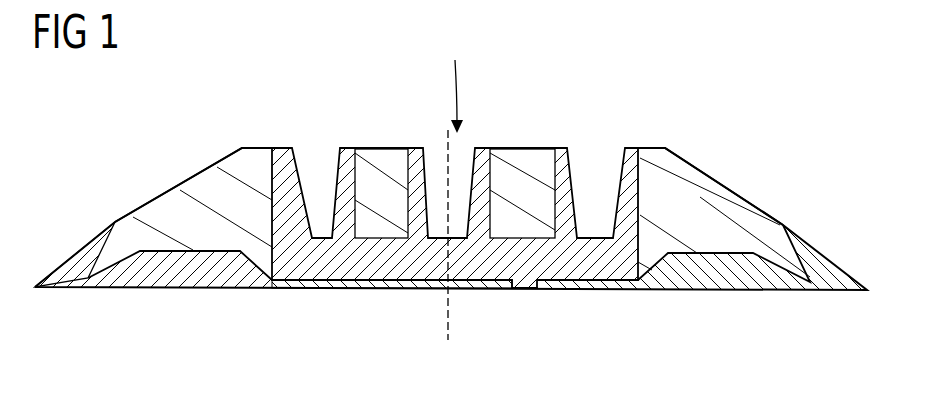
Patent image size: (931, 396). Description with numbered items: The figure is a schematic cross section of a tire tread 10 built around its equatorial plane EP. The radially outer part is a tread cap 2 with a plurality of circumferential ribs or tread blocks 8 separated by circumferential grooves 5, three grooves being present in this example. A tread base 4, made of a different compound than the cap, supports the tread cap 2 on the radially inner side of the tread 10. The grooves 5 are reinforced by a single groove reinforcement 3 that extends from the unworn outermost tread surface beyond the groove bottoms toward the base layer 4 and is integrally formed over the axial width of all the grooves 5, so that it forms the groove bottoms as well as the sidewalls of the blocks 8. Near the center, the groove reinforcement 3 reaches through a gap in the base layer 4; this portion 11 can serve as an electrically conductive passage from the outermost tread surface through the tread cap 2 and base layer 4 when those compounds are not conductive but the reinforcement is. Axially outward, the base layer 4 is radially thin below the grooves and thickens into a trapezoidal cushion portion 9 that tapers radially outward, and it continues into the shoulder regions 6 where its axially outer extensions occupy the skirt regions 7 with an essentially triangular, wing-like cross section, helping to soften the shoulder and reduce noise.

The tread cap 2 is at (710, 190).
The groove reinforcement 3 is at (398, 268).
The tread base layer 4 is at (738, 270).
The circumferential groove 5 is at (314, 230).
The shoulder region 6 is at (163, 191).
The skirt region 7 is at (68, 256).
The tread block 8 is at (518, 148).
The cushion portion 9 is at (173, 295).
The tire tread 10 is at (453, 81).
The portion of the groove reinforcement extending through the base layer 11 is at (527, 288).
The equatorial plane EP is at (450, 253).